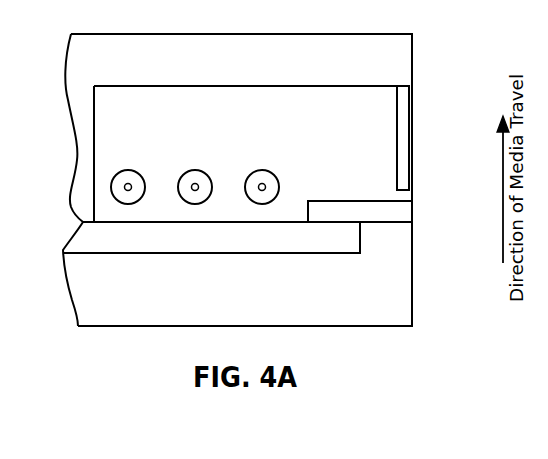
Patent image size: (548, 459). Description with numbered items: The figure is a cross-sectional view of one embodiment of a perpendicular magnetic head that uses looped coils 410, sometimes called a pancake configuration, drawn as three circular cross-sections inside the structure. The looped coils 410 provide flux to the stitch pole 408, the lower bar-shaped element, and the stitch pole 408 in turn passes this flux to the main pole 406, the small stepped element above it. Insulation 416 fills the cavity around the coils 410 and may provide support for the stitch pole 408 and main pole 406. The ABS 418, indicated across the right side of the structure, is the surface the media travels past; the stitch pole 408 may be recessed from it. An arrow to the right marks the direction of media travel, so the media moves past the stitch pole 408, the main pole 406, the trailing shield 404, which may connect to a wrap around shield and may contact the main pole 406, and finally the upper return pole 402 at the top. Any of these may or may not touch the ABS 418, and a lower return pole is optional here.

The upper return pole 402 is at (323, 67).
The trailing shield 404 is at (413, 120).
The main pole 406 is at (413, 208).
The stitch pole 408 is at (268, 247).
The looped coils 410 is at (125, 170).
The insulation 416 is at (358, 160).
The ABS 418 is at (413, 51).